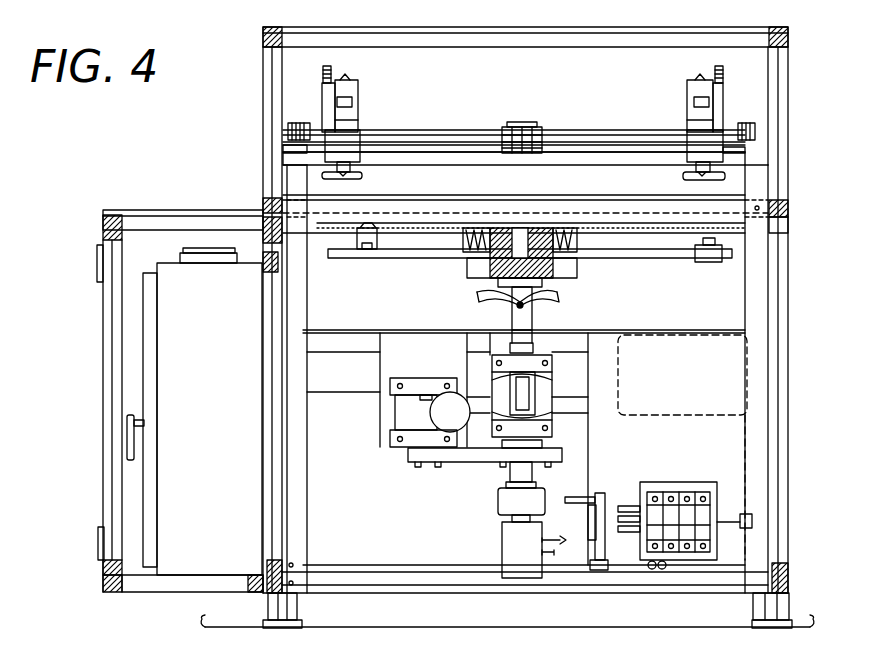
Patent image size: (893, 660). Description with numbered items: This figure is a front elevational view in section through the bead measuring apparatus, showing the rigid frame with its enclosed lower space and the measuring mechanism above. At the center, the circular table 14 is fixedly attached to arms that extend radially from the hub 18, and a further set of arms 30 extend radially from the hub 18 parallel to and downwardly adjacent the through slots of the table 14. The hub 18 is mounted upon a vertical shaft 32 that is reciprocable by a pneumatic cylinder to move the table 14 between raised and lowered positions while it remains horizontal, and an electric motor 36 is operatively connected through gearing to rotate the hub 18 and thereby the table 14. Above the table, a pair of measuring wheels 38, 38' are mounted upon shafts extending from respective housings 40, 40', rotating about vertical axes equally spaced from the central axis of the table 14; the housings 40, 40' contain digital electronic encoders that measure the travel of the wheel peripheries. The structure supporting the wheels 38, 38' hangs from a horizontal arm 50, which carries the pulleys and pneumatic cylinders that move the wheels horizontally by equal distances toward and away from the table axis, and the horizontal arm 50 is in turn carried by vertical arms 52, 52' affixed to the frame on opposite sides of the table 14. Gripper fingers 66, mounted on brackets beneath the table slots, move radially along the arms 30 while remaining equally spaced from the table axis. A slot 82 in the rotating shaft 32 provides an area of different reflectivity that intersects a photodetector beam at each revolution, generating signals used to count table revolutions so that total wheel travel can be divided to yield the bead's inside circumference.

The circular table 14 is at (462, 178).
The hub 18 is at (565, 266).
The arms 30 is at (429, 254).
The shaft 32 is at (525, 320).
The electric motor 36 is at (680, 402).
The measuring wheel 38 is at (365, 187).
The measuring wheel 38' is at (673, 187).
The housing 40 is at (367, 121).
The housing 40' is at (674, 121).
The horizontal arm 50 is at (557, 160).
The vertical arm 52 is at (256, 377).
The vertical arm 52' is at (796, 366).
The gripper fingers 66 is at (370, 250).
The slot 82 is at (522, 380).